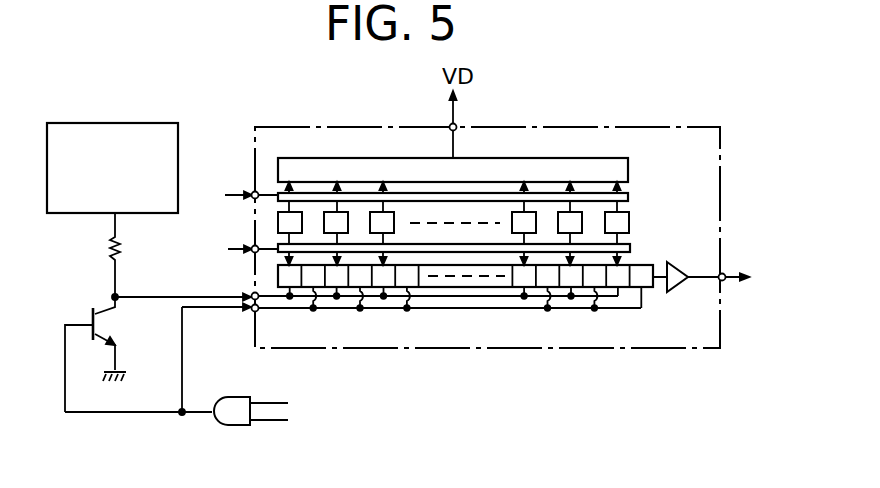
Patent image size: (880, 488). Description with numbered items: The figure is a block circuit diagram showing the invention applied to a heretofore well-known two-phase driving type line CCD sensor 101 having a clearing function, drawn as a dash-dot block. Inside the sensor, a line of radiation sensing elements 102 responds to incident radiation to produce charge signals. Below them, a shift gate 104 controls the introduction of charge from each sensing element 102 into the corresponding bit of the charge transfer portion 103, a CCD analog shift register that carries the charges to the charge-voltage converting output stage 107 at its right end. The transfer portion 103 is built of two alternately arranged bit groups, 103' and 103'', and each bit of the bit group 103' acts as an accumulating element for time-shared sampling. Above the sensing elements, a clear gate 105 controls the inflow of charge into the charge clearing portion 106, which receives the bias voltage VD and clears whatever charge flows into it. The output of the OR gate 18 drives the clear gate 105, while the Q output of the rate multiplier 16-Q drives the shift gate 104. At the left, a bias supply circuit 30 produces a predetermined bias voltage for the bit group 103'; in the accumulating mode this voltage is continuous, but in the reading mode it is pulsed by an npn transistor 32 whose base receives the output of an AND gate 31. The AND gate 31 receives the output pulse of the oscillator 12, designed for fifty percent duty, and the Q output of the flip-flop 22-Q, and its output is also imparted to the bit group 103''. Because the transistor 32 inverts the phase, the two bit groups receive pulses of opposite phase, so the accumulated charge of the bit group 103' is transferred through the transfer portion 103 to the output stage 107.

The bias supply circuit 30 is at (115, 123).
The npn transistor 32 is at (108, 328).
The AND gate 31 is at (235, 428).
The oscillator 12 is at (287, 403).
The Q output of flip-flop 22-Q is at (300, 422).
The OR gate output 18 is at (239, 195).
The Q output of rate multiplier 16-Q is at (221, 249).
The two-phase driving type line CCD sensor 101 is at (613, 127).
The charge clearing portion 106 is at (628, 172).
The clear gate 105 is at (628, 197).
The radiation sensing elements 102 is at (630, 224).
The shift gate 104 is at (630, 250).
The charge transfer portion 103 is at (487, 323).
The bit group 103' is at (435, 316).
The bit group 103'' is at (447, 316).
The output stage 107 is at (680, 289).